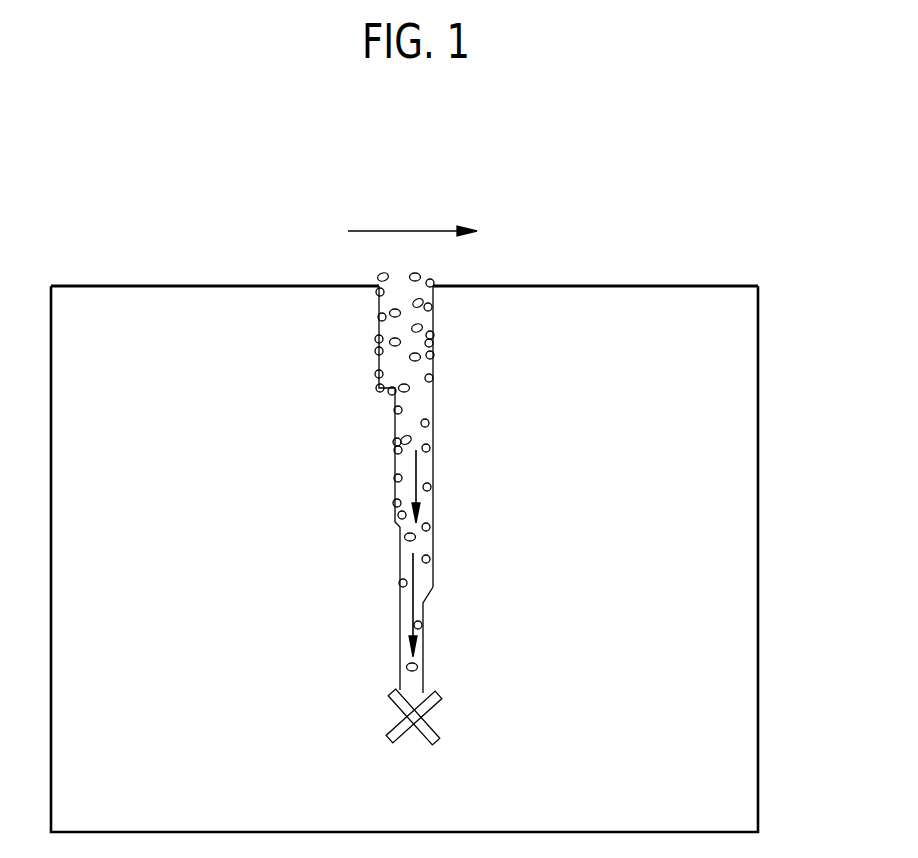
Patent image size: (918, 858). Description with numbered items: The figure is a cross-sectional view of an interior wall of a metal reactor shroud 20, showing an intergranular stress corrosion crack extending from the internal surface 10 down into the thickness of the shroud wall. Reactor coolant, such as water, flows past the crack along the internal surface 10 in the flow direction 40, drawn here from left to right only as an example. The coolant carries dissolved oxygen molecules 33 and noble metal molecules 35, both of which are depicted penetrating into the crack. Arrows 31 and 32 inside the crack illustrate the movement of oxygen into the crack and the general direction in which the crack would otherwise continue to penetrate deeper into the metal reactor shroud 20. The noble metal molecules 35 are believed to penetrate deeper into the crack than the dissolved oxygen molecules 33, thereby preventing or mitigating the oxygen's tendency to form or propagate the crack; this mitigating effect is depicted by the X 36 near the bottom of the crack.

The internal surface 10 is at (705, 285).
The metal reactor shroud 20 is at (758, 360).
The arrow 31 is at (415, 469).
The arrow 32 is at (412, 597).
The dissolved oxygen molecules 33 is at (421, 277).
The noble metal molecules 35 is at (379, 375).
The X 36 is at (442, 715).
The flow direction 40 is at (413, 214).